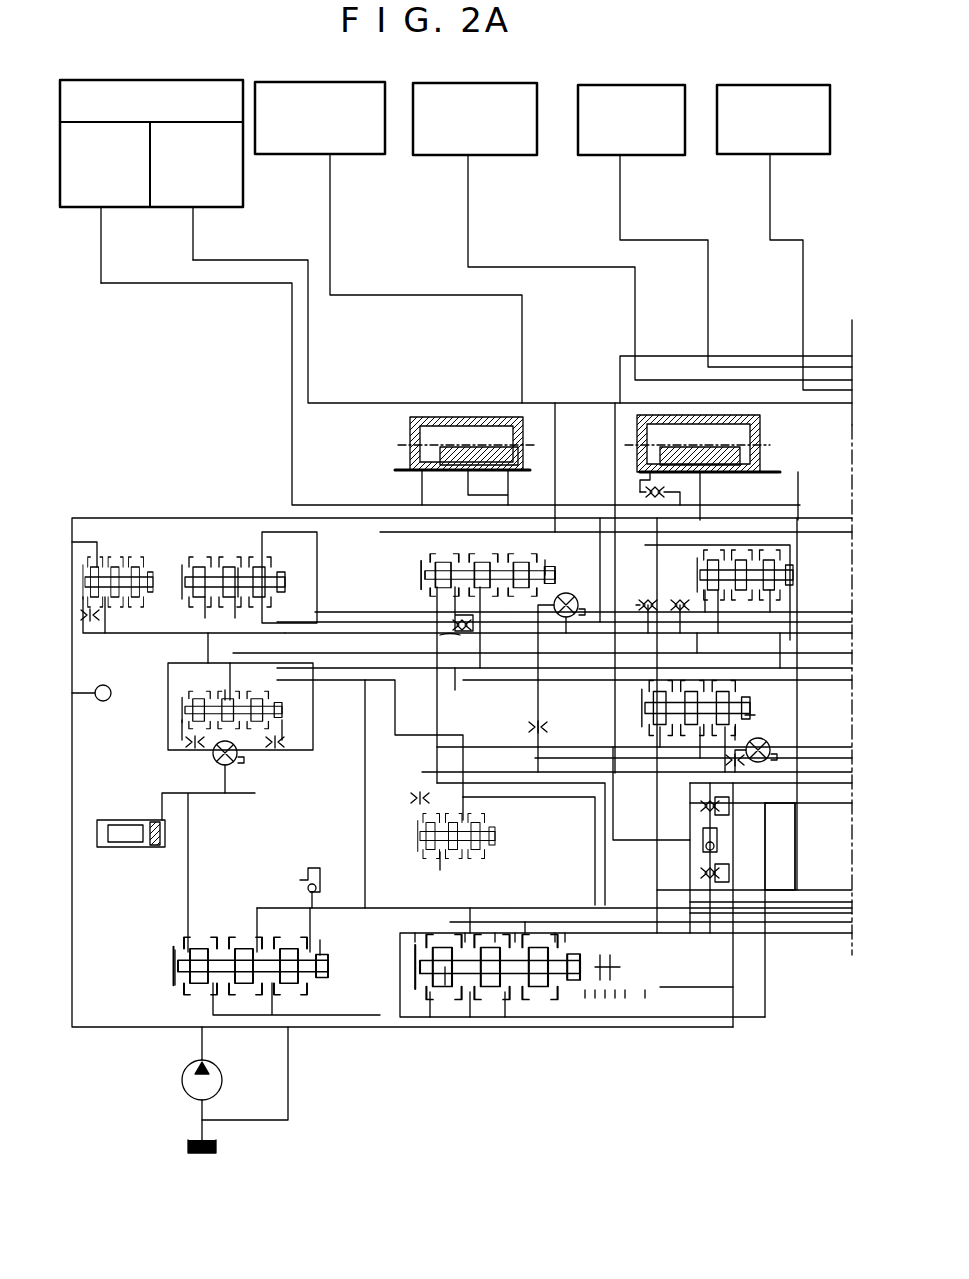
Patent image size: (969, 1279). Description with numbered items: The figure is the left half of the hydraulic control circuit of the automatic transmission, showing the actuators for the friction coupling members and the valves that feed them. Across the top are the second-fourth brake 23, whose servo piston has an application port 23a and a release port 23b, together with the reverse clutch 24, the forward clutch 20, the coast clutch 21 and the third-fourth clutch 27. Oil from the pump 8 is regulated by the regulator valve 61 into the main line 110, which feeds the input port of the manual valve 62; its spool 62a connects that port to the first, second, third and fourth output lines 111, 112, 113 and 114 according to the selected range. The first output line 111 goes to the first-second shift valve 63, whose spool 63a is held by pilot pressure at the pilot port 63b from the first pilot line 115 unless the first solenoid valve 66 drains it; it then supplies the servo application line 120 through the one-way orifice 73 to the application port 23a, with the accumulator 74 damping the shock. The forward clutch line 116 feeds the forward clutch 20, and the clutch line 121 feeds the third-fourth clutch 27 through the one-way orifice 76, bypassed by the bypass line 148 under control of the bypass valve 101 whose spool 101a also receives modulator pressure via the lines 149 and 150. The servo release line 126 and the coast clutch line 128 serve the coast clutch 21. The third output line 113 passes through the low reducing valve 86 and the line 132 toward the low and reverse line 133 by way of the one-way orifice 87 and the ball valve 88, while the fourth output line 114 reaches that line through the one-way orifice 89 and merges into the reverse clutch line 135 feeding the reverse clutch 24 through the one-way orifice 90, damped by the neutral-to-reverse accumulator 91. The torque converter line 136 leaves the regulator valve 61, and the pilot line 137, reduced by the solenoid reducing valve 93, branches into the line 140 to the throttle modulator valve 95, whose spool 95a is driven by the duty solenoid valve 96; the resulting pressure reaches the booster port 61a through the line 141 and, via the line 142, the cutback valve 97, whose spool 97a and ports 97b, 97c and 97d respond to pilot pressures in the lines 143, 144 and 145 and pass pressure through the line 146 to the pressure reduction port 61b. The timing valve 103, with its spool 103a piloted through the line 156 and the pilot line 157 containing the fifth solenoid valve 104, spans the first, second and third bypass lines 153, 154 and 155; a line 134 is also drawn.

The 2-4 brake 23 is at (208, 80).
The application port 23a is at (230, 207).
The release port 23b is at (133, 207).
The reverse clutch 24 is at (380, 82).
The forward clutch 20 is at (507, 83).
The coast clutch 21 is at (647, 85).
The 3-4 clutch 27 is at (785, 85).
The oil pump 8 is at (177, 1080).
The regulator valve 61 is at (228, 912).
The booster port 61a is at (175, 947).
The pressure reduction port 61b is at (322, 945).
The manual valve 62 is at (618, 966).
The spool 62a is at (450, 978).
The 1-2 shift valve 63 is at (758, 713).
The spool 63a is at (774, 713).
The pilot port 63b is at (736, 727).
The first solenoid valve 66 is at (751, 763).
The one-way orifice 73 is at (645, 598).
The accumulator 74 is at (407, 430).
The one-way orifice 76 is at (678, 598).
The low reducing valve 86 is at (508, 841).
The one-way orifice 87 is at (730, 815).
The ball valve 88 is at (717, 840).
The one-way orifice 89 is at (720, 858).
The one-way orifice 90 is at (648, 493).
The N-R accumulator 91 is at (760, 440).
The solenoid reducing valve 93 is at (138, 561).
The throttle modulator valve 95 is at (283, 713).
The spool 95a is at (224, 700).
The duty solenoid valve 96 is at (216, 764).
The cutback valve 97 is at (213, 558).
The spool 97a is at (238, 567).
The first port 97b is at (235, 598).
The second port 97c is at (305, 576).
The third port 97d is at (205, 598).
The bypass valve 101 is at (722, 594).
The spool 101a is at (758, 604).
The timing valve 103 is at (553, 573).
The spool 103a is at (560, 566).
The fifth solenoid valve 104 is at (575, 586).
The main line 110 is at (413, 1030).
The first output line 111 is at (525, 922).
The second output line 112 is at (572, 1030).
The third output line 113 is at (470, 908).
The fourth output line 114 is at (565, 933).
The first pilot line 115 is at (775, 803).
The forward clutch line 116 is at (635, 340).
The servo application line 120 is at (292, 447).
The 3-4 clutch line 121 is at (803, 340).
The servo release line 126 is at (308, 380).
The coast clutch line 128 is at (708, 340).
The line 132 is at (470, 778).
The low and reverse line 133 is at (622, 806).
The line 134 is at (710, 936).
The reverse clutch line 135 is at (522, 340).
The torque converter line 136 is at (372, 908).
The pilot line 137 is at (140, 630).
The line 140 is at (205, 654).
The line 141 is at (227, 794).
The line 142 is at (313, 710).
The line 143 is at (480, 747).
The line 144 is at (333, 612).
The line 145 is at (390, 622).
The line 146 is at (365, 779).
The bypass line 148 is at (769, 645).
The line 149 is at (400, 653).
The line 150 is at (711, 637).
The first bypass line 153 is at (512, 628).
The second bypass line 154 is at (555, 455).
The third bypass line 155 is at (465, 691).
The line 156 is at (656, 872).
The pilot line 157 is at (538, 713).